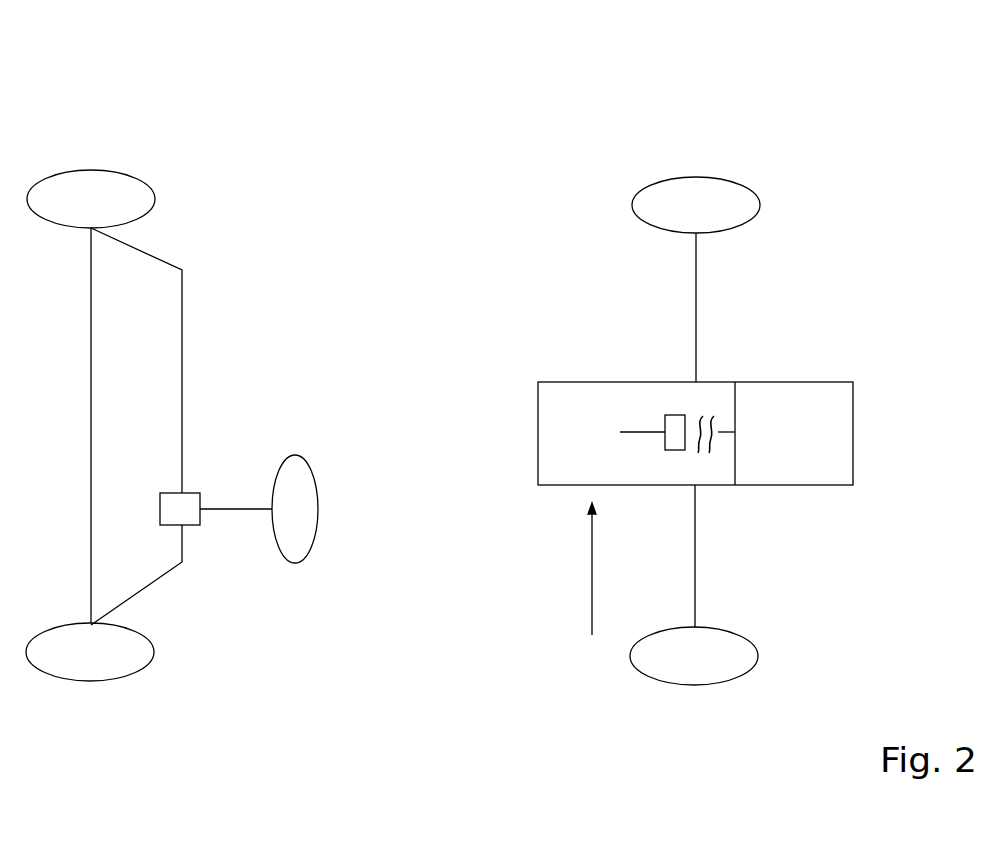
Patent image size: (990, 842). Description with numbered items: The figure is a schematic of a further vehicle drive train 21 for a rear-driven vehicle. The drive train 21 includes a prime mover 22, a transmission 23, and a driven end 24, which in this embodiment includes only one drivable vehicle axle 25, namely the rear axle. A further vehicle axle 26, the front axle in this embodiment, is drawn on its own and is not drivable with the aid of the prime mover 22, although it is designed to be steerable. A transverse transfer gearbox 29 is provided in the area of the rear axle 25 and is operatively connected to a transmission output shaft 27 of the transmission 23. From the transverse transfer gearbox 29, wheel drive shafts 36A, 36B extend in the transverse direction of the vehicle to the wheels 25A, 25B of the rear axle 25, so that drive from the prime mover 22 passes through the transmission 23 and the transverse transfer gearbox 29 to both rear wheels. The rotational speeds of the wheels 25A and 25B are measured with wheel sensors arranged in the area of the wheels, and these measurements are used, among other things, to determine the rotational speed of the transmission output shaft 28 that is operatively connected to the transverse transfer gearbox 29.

The vehicle drive train 21 is at (733, 364).
The prime mover 22 is at (830, 412).
The transmission 23 is at (561, 395).
The driven end 24 is at (696, 138).
The vehicle axle 25 is at (806, 617).
The wheel 25A is at (690, 188).
The wheel 25B is at (733, 644).
The further vehicle axle 26 is at (135, 142).
The transmission output shaft 27 is at (720, 430).
The transmission output shaft 28 is at (637, 431).
The transverse transfer gearbox 29 is at (675, 413).
The wheel drive shaft 36A is at (699, 310).
The wheel drive shaft 36B is at (698, 545).